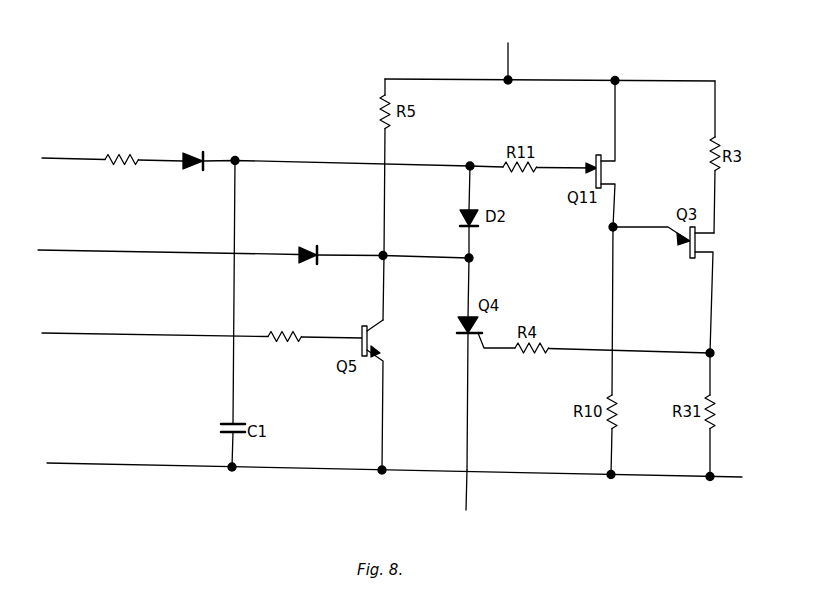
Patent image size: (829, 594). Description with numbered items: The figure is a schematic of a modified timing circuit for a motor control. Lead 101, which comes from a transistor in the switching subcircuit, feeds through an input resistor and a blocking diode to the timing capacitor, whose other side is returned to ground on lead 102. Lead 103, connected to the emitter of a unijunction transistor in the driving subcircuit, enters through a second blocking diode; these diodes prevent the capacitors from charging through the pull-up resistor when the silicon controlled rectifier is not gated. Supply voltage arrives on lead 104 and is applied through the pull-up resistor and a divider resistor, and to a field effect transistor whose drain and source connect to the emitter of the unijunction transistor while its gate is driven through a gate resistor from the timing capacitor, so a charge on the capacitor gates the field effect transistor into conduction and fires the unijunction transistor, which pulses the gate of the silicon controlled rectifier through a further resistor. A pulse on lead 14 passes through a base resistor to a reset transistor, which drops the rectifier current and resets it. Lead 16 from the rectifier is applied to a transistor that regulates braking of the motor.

The output lead 101 is at (58, 158).
The lead 103 is at (58, 250).
The lead 14 is at (61, 333).
The lead 102 is at (60, 463).
The lead 104 is at (550, 64).
The lead 16 is at (465, 494).